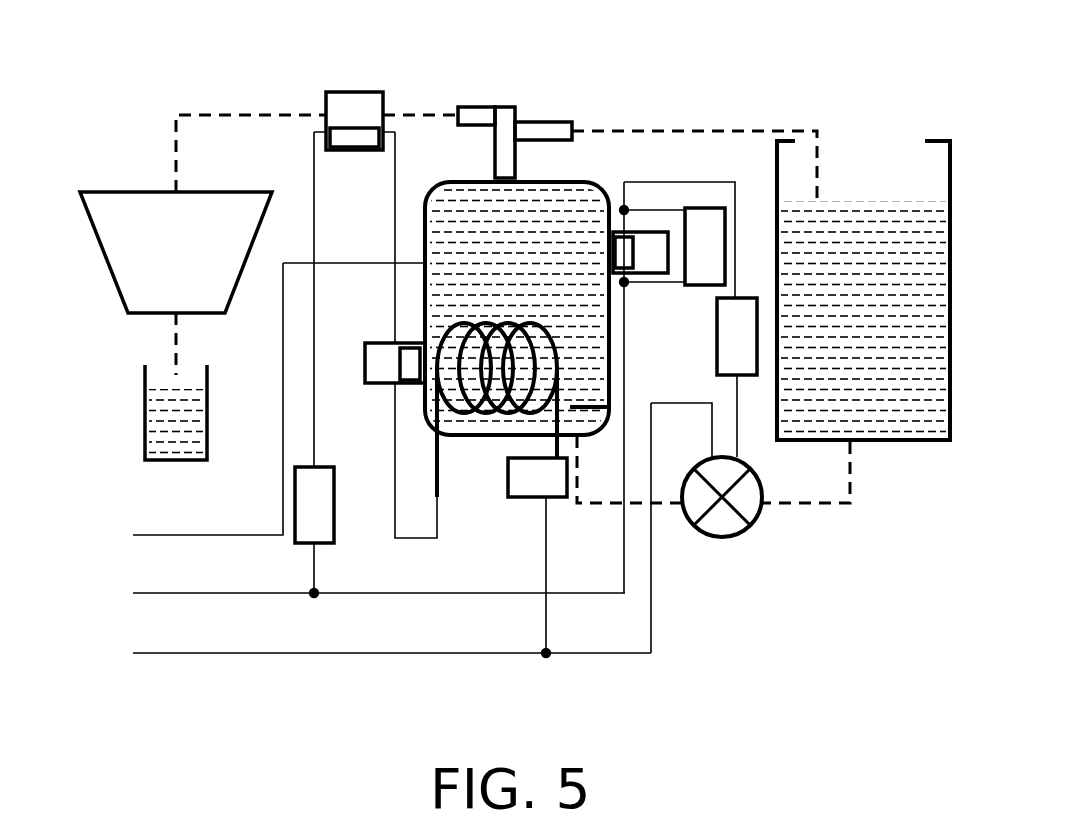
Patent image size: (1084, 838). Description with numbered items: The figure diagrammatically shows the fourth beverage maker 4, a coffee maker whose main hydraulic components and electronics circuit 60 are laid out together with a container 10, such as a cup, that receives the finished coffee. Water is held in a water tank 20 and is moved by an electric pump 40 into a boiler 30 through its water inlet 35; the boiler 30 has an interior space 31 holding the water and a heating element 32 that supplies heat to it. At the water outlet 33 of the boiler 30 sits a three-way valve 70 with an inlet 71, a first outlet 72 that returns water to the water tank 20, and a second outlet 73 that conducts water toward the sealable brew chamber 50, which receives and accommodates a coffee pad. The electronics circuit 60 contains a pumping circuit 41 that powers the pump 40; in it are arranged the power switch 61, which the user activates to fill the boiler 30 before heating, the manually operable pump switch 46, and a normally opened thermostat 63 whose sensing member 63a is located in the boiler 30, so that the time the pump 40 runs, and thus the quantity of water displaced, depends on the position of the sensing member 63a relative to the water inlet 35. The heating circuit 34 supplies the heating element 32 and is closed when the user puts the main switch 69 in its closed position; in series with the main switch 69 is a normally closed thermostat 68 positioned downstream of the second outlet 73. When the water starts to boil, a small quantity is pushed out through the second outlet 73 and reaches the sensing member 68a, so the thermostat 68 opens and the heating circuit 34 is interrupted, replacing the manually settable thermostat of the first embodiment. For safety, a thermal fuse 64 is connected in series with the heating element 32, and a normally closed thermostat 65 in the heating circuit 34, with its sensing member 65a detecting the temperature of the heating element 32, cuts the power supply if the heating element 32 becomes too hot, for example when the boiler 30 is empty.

The fourth beverage maker 4 is at (803, 69).
The container 10 is at (152, 424).
The water tank 20 is at (866, 168).
The boiler 30 is at (445, 200).
The interior space 31 is at (533, 245).
The heating element 32 is at (485, 410).
The water outlet 33 is at (470, 190).
The heating circuit 34 is at (278, 158).
The water inlet 35 is at (557, 440).
The electric pump 40 is at (723, 522).
The pumping circuit 41 is at (758, 434).
The pump switch 46 is at (723, 351).
The brew chamber 50 is at (162, 268).
The electronics circuit 60 is at (701, 620).
The power switch 61 is at (691, 261).
The normally opened thermostat 63 is at (646, 234).
The sensing member 63a is at (627, 253).
The thermal fuse 64 is at (532, 491).
The normally closed thermostat 65 is at (382, 372).
The sensing member 65a is at (409, 373).
The normally closed thermostat 68 is at (354, 123).
The sensing member 68a is at (357, 150).
The main switch 69 is at (298, 497).
The three-way valve 70 is at (511, 89).
The inlet 71 is at (505, 130).
The first outlet 72 is at (545, 128).
The second outlet 73 is at (472, 112).